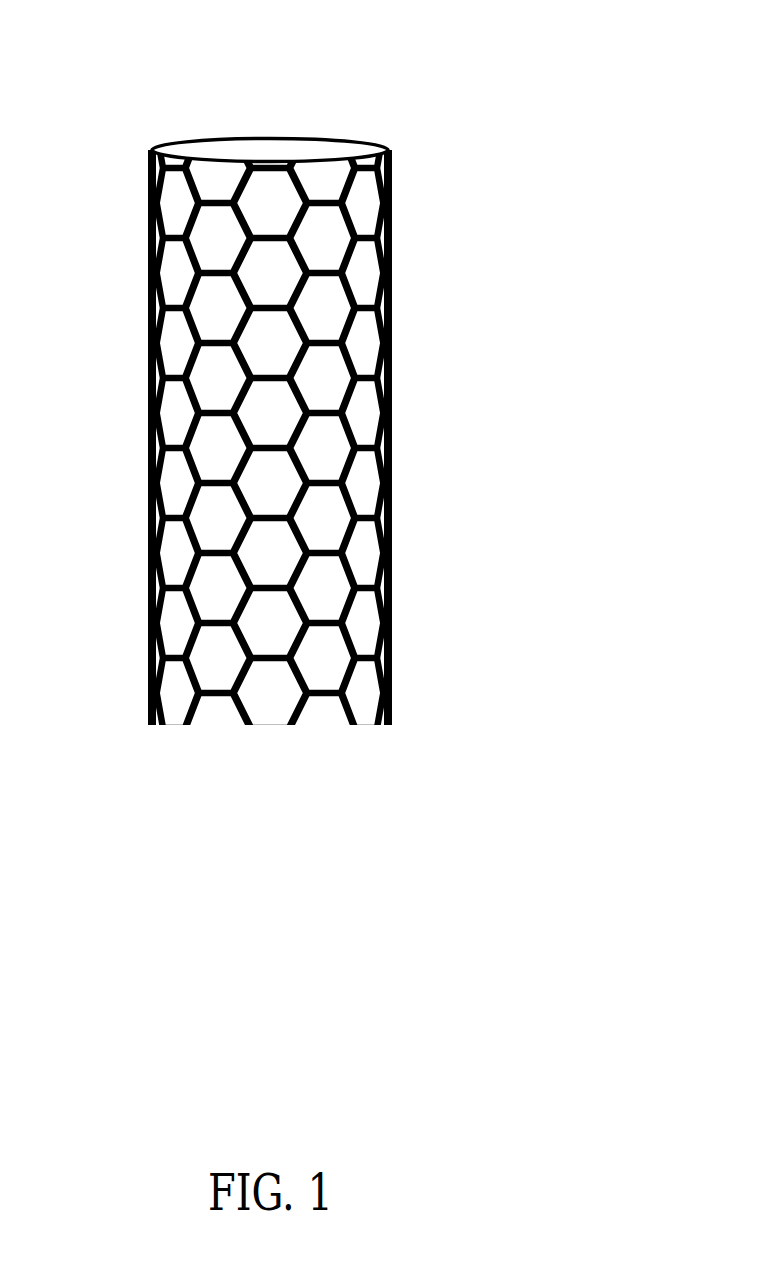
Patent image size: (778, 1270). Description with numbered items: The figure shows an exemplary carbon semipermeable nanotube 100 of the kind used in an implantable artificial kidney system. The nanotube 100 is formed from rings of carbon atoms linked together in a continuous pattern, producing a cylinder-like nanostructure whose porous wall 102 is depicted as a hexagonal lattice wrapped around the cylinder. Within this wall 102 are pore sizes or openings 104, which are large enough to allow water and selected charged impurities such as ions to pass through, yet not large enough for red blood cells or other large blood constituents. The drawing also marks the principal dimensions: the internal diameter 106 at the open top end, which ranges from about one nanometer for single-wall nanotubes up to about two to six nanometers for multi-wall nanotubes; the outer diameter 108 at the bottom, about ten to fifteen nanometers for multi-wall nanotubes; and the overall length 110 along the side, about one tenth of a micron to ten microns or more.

The carbon semipermeable nanotube 100 is at (296, 414).
The porous wall 102 is at (151, 145).
The pore size or opening 104 is at (142, 240).
The internal diameter 106 is at (375, 143).
The outer diameter 108 is at (395, 735).
The overall length 110 is at (427, 148).